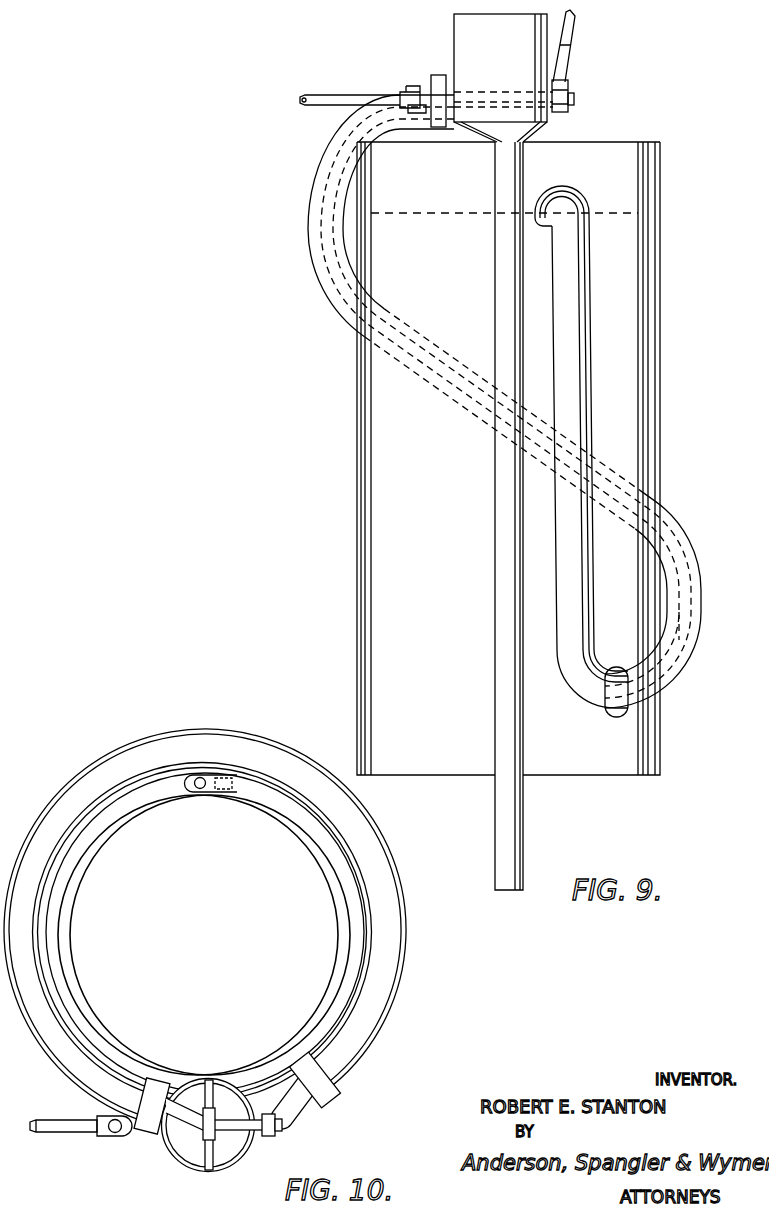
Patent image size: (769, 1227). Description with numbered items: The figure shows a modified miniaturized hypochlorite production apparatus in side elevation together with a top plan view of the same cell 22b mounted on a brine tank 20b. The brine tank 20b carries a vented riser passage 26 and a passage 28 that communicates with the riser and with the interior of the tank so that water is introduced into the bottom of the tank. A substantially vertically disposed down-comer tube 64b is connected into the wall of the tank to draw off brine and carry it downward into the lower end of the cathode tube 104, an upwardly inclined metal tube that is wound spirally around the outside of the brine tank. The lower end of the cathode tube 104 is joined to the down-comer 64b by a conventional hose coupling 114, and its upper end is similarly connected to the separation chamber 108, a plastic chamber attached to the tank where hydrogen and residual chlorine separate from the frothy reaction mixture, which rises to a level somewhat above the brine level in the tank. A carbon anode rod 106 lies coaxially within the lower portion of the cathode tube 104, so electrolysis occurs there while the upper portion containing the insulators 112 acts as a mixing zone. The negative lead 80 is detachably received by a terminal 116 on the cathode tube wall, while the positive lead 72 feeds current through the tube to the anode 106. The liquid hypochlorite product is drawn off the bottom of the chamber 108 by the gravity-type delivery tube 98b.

In FIG. 9, the brine tank 20b is at (372, 432).
In FIG. 10, the brine tank 20b is at (345, 988).
In FIG. 9, the cell 22b is at (318, 228).
In FIG. 10, the cell 22b is at (105, 775).
In FIG. 10, the vented riser passage 26 is at (200, 790).
In FIG. 10, the passage 28 is at (237, 776).
In FIG. 9, the down-comer tube 64b is at (585, 342).
In FIG. 10, the down-comer tube 64b is at (292, 1105).
In FIG. 9, the positive lead 72 is at (572, 34).
In FIG. 10, the positive lead 72 is at (266, 1137).
In FIG. 9, the negative lead 80 is at (304, 102).
In FIG. 10, the negative lead 80 is at (44, 1132).
In FIG. 9, the delivery tube 98b is at (505, 605).
In FIG. 9, the cathode tube 104 is at (680, 535).
In FIG. 10, the cathode tube 104 is at (388, 947).
In FIG. 9, the anode rod 106 is at (686, 582).
In FIG. 9, the separation chamber 108 is at (476, 23).
In FIG. 10, the separation chamber 108 is at (182, 1146).
In FIG. 9, the insulator 112 is at (321, 180).
In FIG. 9, the hose coupling 114 is at (437, 75).
In FIG. 10, the hose coupling 114 is at (148, 1130).
In FIG. 9, the terminal 116 is at (418, 113).
In FIG. 10, the terminal 116 is at (100, 1118).